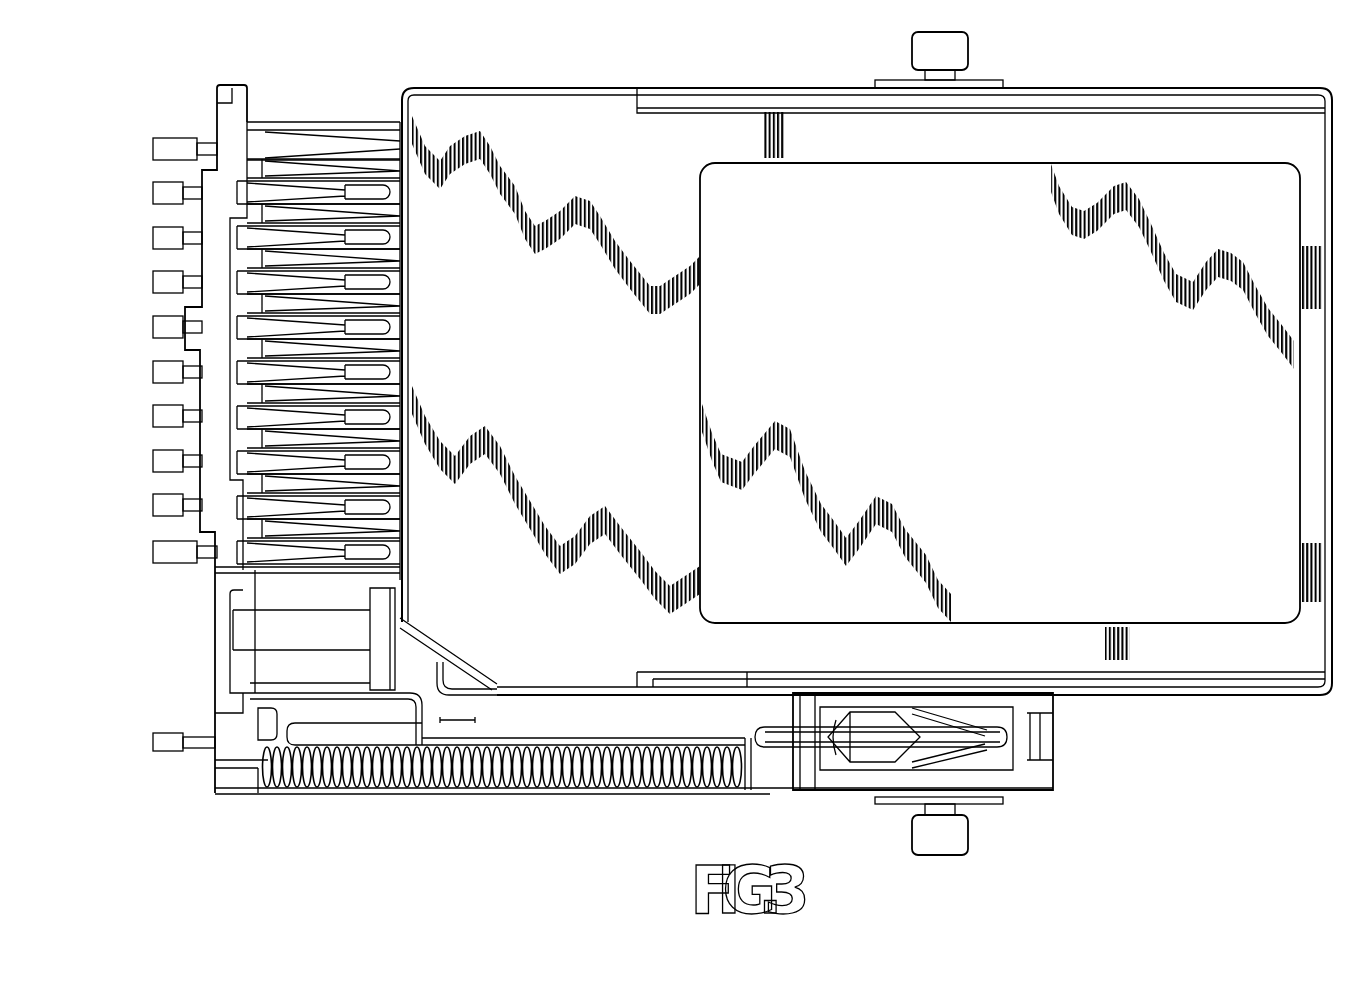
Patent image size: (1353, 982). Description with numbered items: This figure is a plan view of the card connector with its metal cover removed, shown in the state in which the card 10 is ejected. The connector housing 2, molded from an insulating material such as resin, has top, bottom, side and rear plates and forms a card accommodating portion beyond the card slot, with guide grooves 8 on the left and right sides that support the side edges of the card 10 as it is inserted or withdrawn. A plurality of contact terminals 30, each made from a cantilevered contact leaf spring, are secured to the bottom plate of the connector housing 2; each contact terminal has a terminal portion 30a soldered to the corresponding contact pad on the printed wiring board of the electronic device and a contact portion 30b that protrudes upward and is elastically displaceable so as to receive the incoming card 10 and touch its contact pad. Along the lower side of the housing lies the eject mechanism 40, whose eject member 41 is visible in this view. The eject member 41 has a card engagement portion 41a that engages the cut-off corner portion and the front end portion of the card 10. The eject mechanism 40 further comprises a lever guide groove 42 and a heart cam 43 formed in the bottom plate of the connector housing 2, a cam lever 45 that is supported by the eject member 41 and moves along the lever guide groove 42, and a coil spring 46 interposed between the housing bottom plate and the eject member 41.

The card 10 is at (1108, 128).
The terminal portion 30a is at (176, 188).
The contact terminals 30 is at (292, 148).
The contact portion 30b is at (357, 190).
The connector housing 2 is at (270, 595).
The card engagement portion 41a is at (388, 603).
The eject member 41 is at (548, 718).
The guide grooves 8 is at (462, 690).
The coil spring 46 is at (397, 783).
The eject mechanism 40 is at (760, 794).
The cam lever 45 is at (826, 742).
The heart cam 43 is at (900, 713).
The lever guide groove 42 is at (930, 750).